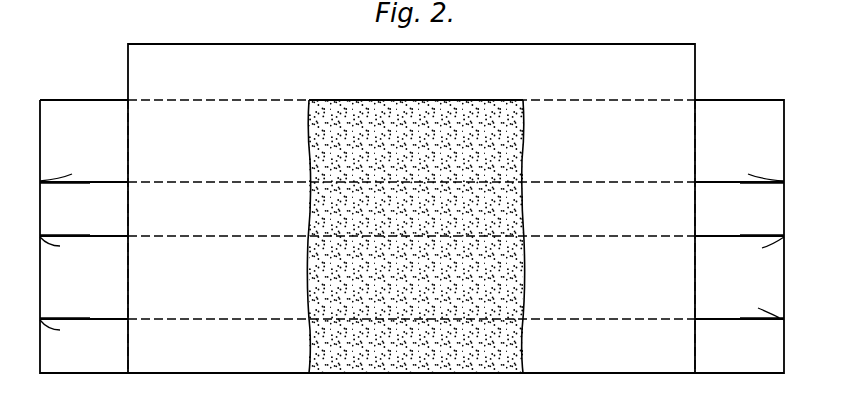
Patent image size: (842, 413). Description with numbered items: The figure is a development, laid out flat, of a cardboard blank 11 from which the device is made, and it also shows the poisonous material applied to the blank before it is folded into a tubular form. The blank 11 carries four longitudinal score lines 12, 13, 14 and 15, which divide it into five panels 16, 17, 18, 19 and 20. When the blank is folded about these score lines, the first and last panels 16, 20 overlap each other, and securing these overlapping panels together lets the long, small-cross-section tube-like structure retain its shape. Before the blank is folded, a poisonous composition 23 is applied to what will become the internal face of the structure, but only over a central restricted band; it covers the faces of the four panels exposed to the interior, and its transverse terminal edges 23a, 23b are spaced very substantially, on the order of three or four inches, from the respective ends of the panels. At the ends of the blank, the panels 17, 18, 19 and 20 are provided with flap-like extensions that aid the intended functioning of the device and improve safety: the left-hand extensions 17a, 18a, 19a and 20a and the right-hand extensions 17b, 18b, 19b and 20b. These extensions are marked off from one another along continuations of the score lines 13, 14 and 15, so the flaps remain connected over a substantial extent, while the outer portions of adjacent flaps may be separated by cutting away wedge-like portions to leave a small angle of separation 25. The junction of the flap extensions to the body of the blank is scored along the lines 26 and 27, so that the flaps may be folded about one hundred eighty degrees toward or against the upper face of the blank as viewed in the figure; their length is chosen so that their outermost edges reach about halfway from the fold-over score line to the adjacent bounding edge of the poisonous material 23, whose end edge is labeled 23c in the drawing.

The blank 11 is at (612, 44).
The longitudinal score line 12 is at (222, 98).
The longitudinal score line 13 is at (226, 180).
The longitudinal score line 14 is at (224, 234).
The longitudinal score line 15 is at (214, 317).
The first panel 16 is at (411, 72).
The panel 17 is at (411, 141).
The panel 18 is at (411, 209).
The panel 19 is at (411, 277).
The last panel 20 is at (411, 346).
The left-hand flap extension 17a is at (84, 154).
The left-hand flap extension 18a is at (84, 219).
The left-hand flap extension 19a is at (84, 295).
The left-hand flap extension 20a is at (84, 359).
The right-hand flap extension 17b is at (739, 154).
The right-hand flap extension 18b is at (739, 218).
The right-hand flap extension 19b is at (739, 293).
The right-hand flap extension 20b is at (739, 355).
The poisonous composition 23 is at (505, 290).
The terminal edge 23a is at (308, 254).
The terminal edge 23b is at (524, 257).
The strip end edge 23c is at (406, 98).
The angle of separation 25 is at (412, 243).
The score line 26 is at (131, 141).
The score line 27 is at (694, 171).